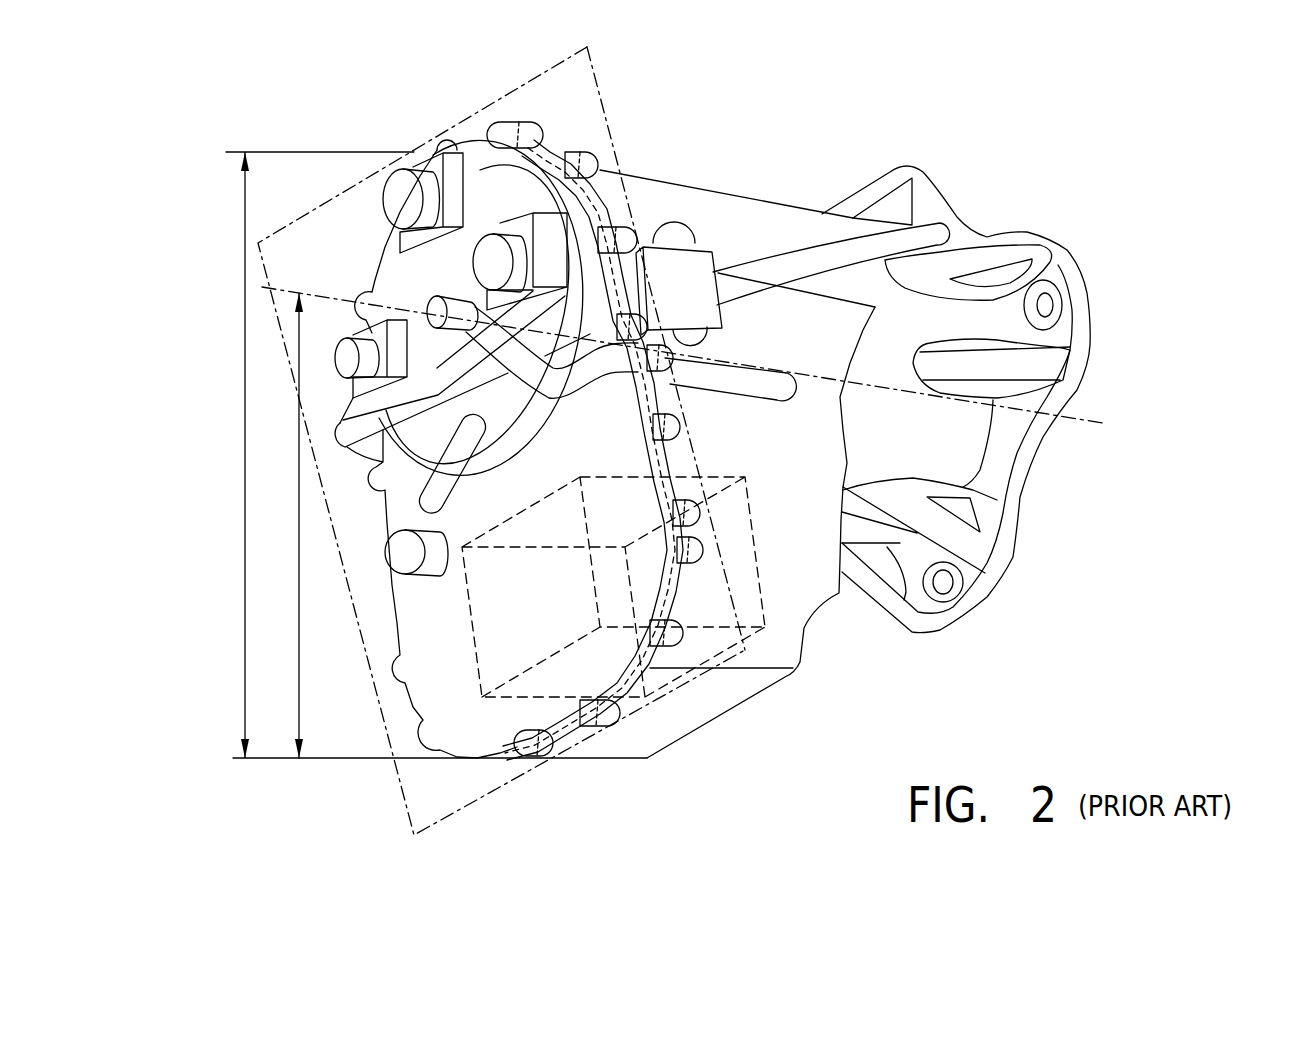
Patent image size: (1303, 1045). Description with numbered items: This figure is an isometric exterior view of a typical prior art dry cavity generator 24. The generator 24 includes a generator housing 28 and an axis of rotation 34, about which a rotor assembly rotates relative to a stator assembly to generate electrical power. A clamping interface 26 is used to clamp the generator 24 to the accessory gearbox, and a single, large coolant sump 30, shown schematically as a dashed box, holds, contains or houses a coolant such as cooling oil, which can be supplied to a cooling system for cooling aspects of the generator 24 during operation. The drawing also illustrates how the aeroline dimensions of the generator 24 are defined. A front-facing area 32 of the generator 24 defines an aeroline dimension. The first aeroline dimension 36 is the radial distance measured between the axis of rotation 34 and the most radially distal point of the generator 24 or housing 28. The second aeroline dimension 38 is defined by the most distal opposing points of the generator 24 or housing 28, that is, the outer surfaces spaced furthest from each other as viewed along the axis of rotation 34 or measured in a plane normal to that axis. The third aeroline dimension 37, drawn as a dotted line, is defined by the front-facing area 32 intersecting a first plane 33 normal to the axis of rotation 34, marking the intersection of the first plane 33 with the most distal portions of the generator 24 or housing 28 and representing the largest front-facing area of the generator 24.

The dry cavity generator 24 is at (676, 113).
The clamping interface 26 is at (1103, 263).
The generator housing 28 is at (695, 195).
The coolant sump 30 is at (680, 683).
The front-facing area 32 is at (412, 114).
The first plane 33 is at (598, 78).
The axis of rotation 34 is at (1104, 425).
The first aeroline dimension 36 is at (299, 503).
The third aeroline dimension 37 is at (603, 173).
The second aeroline dimension 38 is at (244, 397).